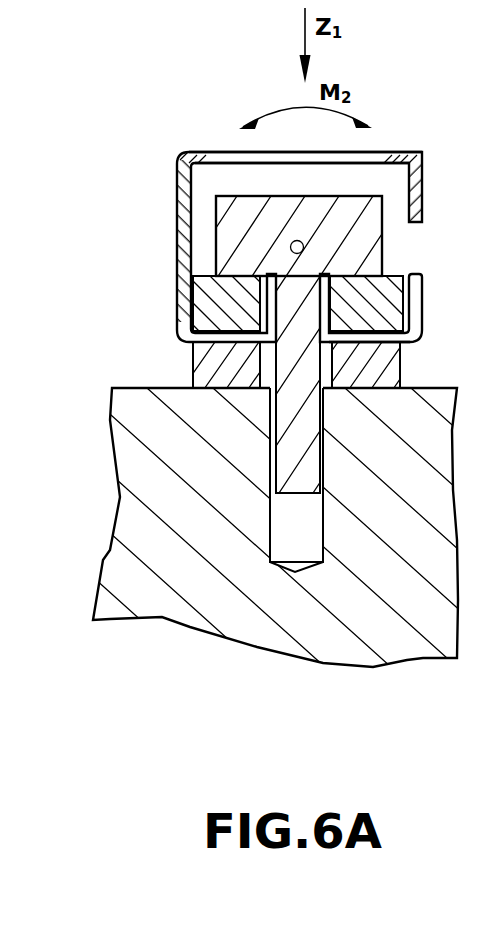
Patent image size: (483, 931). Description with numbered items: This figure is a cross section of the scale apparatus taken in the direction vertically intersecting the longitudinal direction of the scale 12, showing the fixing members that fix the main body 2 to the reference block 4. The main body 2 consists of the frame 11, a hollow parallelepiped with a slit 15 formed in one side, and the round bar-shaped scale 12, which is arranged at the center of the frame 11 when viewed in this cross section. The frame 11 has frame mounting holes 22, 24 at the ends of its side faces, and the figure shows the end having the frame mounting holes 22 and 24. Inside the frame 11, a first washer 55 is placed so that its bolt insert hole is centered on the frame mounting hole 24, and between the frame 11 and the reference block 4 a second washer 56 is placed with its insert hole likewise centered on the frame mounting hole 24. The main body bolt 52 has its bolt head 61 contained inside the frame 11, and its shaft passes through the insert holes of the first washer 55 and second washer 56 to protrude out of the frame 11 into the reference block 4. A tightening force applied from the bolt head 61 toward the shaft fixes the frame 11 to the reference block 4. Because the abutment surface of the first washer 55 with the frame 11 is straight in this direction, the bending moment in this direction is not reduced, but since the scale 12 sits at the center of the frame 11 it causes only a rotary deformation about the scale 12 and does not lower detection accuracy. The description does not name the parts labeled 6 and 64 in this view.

The main body 2 is at (264, 99).
The reference block 4 is at (367, 635).
The bolt 6 is at (305, 424).
The frame 11 is at (178, 182).
The scale 12 is at (290, 246).
The slit 15 is at (407, 262).
The frame mounting hole 22 is at (384, 152).
The frame mounting hole 24 is at (335, 348).
The main body bolt 52 is at (317, 195).
The first washer 55 is at (213, 298).
The second washer 56 is at (203, 365).
The bolt head 61 is at (248, 195).
The bolt threaded end 64 is at (379, 496).